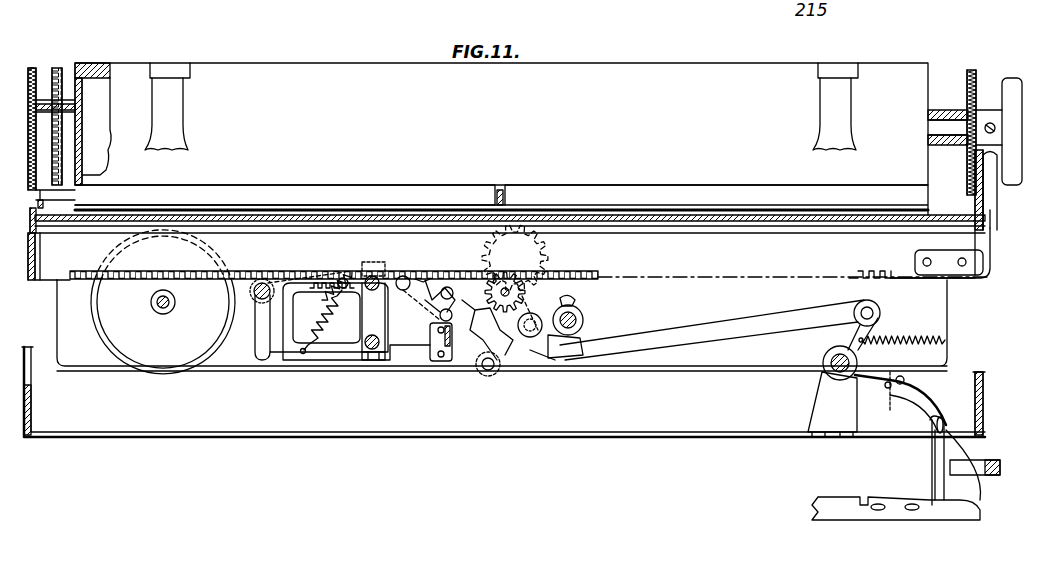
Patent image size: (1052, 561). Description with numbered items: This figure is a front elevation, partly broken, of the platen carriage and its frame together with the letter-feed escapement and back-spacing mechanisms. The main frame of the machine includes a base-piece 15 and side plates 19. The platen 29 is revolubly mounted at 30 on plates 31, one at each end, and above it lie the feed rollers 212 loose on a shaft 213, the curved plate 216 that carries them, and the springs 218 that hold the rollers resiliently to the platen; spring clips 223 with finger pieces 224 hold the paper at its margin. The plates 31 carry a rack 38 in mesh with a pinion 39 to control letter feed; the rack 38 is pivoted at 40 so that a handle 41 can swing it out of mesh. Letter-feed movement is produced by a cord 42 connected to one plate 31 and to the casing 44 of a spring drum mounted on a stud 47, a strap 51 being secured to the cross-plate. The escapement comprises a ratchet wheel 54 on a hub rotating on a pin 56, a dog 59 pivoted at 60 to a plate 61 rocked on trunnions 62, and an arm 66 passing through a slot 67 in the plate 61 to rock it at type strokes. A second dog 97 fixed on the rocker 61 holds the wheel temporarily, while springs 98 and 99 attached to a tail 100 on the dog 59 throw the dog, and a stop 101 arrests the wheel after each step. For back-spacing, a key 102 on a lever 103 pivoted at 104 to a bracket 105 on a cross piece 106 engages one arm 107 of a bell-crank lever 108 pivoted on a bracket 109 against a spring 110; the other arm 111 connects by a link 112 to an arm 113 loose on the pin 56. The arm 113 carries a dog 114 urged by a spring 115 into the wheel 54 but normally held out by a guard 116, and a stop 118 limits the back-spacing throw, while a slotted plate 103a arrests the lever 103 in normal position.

The base-piece 15 is at (576, 432).
The side plates 19 is at (25, 362).
The platen 29 is at (342, 68).
The platen mounting 30 is at (952, 125).
The plates 31 is at (967, 78).
The rack 38 is at (582, 280).
The pinion 39 is at (528, 312).
The rack pivot 40 is at (30, 232).
The handle 41 is at (992, 252).
The cord 42 is at (618, 222).
The casing 44 is at (162, 370).
The stud 47 is at (176, 301).
The strap 51 is at (30, 210).
The ratchet wheel 54 is at (500, 370).
The pin 56 is at (506, 280).
The dog 59 is at (422, 277).
The dog pivot 60 is at (398, 290).
The plate 61 is at (297, 362).
The trunnions 62 is at (375, 272).
The arm 66 is at (266, 282).
The slot 67 is at (262, 345).
The dog 97 is at (448, 286).
The spring 98 is at (332, 312).
The spring 99 is at (318, 296).
The tail 100 is at (355, 275).
The stop 101 is at (452, 310).
The back-spacing key 102 is at (996, 460).
The lever 103 is at (922, 398).
The slotted plate 103a is at (922, 380).
The lever pivot 104 is at (945, 420).
The bracket 105 is at (933, 457).
The cross piece 106 is at (860, 493).
The arm 107 is at (885, 390).
The bell-crank lever 108 is at (868, 346).
The bracket 109 is at (815, 392).
The spring 110 is at (881, 325).
The arm 111 is at (824, 356).
The link 112 is at (702, 328).
The arm 113 is at (500, 336).
The dog 114 is at (548, 352).
The spring 115 is at (584, 316).
The guard 116 is at (568, 290).
The stop 118 is at (430, 338).
The feed rollers 212 is at (376, 190).
The shaft 213 is at (62, 195).
The plate 216 is at (62, 222).
The spring 218 is at (29, 112).
The spring clips 223 is at (178, 100).
The finger piece 224 is at (182, 63).